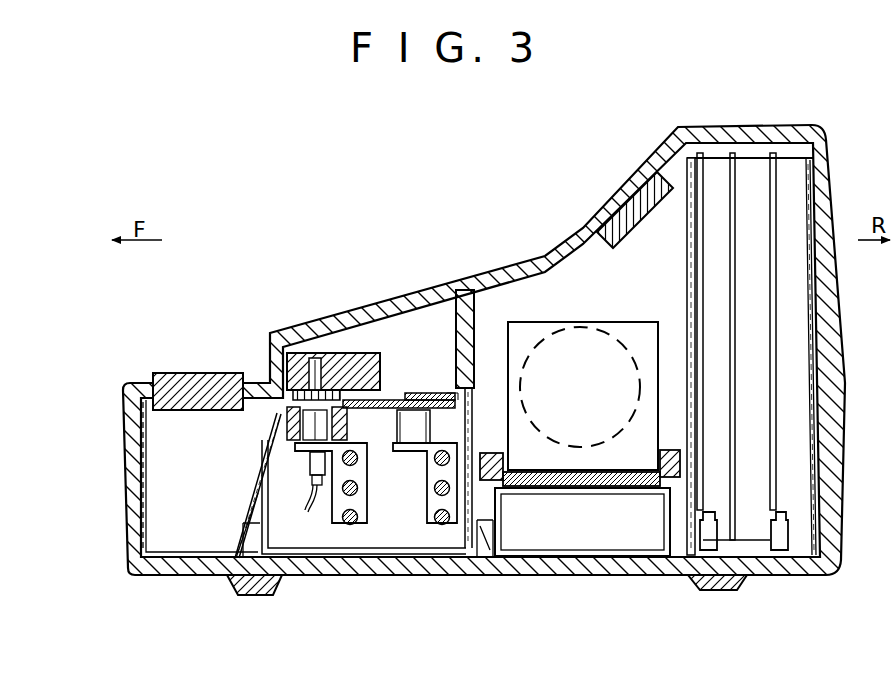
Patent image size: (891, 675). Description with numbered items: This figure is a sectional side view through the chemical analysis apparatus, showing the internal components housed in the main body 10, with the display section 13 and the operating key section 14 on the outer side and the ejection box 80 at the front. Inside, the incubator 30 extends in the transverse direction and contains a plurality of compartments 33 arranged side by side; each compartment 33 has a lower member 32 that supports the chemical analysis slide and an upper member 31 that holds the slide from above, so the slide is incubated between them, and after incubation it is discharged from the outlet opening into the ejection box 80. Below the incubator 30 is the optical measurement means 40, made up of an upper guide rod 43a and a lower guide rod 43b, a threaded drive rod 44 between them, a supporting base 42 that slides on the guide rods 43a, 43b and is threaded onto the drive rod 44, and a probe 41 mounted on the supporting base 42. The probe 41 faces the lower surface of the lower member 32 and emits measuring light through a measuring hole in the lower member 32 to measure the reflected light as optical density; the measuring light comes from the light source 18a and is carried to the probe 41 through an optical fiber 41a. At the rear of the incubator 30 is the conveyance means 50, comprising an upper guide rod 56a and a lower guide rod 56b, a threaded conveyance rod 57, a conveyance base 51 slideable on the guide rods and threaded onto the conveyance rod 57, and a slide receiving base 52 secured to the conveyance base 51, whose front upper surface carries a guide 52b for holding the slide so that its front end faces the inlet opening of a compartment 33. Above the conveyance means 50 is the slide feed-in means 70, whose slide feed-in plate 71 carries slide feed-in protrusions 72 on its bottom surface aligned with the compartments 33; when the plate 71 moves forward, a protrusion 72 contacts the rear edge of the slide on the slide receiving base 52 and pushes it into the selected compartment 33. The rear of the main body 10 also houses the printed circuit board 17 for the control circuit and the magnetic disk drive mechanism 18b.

The main body 10 is at (388, 570).
The display section 13 is at (617, 195).
The operating key section 14 is at (188, 380).
The printed circuit board 17 is at (763, 329).
The light source 18a is at (600, 398).
The magnetic disk drive mechanism 18b is at (598, 532).
The incubator 30 is at (361, 344).
The upper member 31 is at (316, 358).
The lower member 32 is at (292, 418).
The compartment 33 is at (290, 399).
The optical measurement means 40 is at (293, 468).
The probe 41 is at (276, 432).
The optical fiber 41a is at (255, 495).
The supporting base 42 is at (335, 505).
The upper guide rod 43a is at (440, 423).
The lower guide rod 43b is at (348, 526).
The drive rod 44 is at (360, 489).
The conveyance means 50 is at (413, 462).
The conveyance base 51 is at (445, 438).
The slide receiving base 52 is at (286, 428).
The guide 52b is at (452, 391).
The upper guide rod 56a is at (497, 461).
The lower guide rod 56b is at (446, 526).
The conveyance rod 57 is at (498, 503).
The slide feed-in means 70 is at (474, 345).
The slide feed-in plate 71 is at (468, 386).
The slide feed-in protrusion 72 is at (445, 392).
The ejection box 80 is at (132, 490).